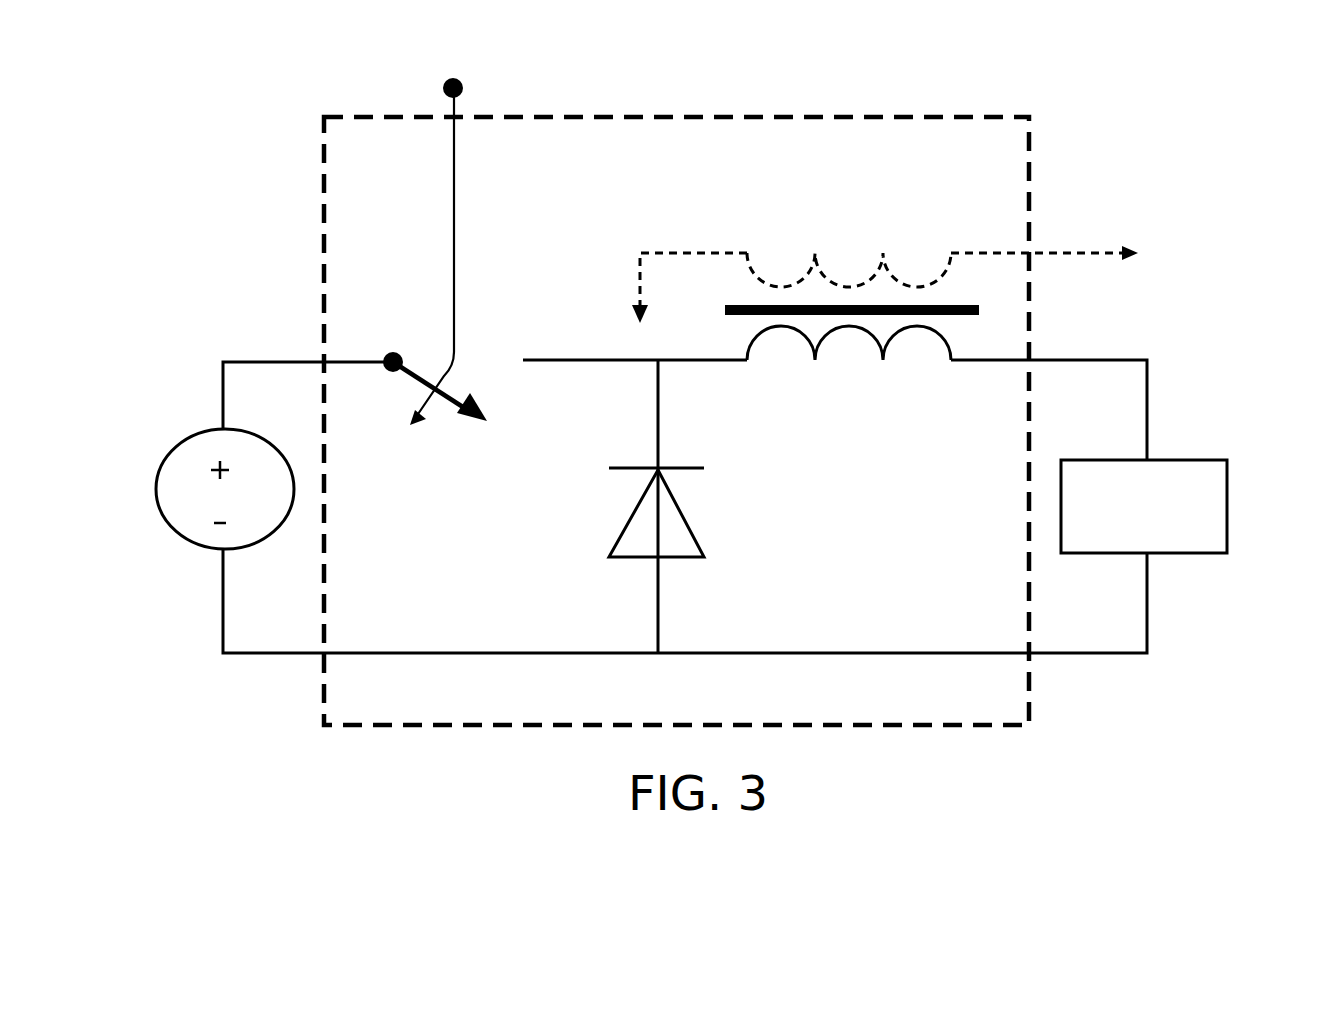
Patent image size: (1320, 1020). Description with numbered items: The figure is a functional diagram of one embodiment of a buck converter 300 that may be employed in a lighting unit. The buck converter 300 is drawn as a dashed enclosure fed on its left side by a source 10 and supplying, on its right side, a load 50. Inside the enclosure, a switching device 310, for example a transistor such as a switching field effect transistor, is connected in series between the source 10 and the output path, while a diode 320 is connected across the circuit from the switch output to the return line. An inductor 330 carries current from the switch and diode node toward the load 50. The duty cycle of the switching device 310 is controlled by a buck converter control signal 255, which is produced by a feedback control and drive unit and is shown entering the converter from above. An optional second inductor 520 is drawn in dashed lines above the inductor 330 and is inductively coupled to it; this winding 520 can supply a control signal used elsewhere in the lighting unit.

The voltage source 10 is at (156, 488).
The load 50 is at (1227, 500).
The buck converter control signal 255 is at (444, 236).
The buck converter 300 is at (678, 117).
The switching device 310 is at (445, 458).
The diode 320 is at (713, 521).
The inductor 330 is at (847, 373).
The second inductor 520 is at (847, 239).